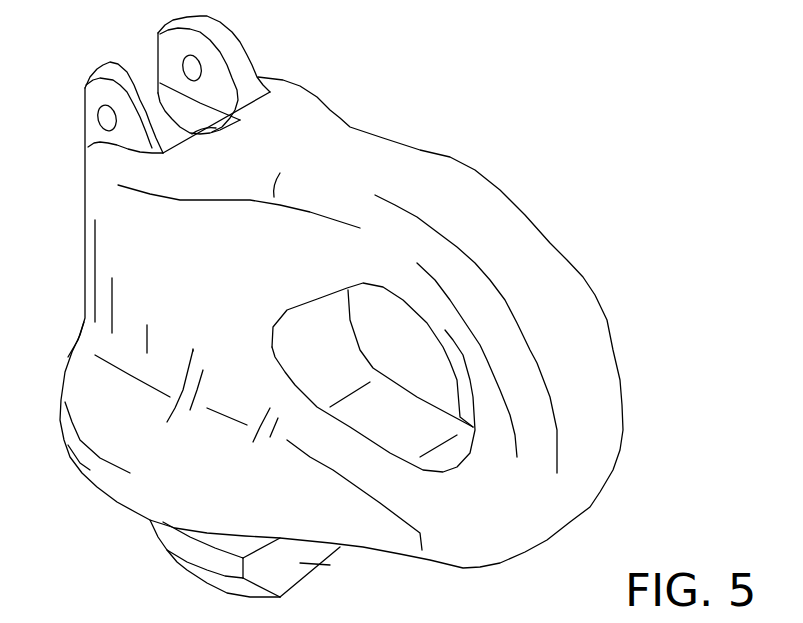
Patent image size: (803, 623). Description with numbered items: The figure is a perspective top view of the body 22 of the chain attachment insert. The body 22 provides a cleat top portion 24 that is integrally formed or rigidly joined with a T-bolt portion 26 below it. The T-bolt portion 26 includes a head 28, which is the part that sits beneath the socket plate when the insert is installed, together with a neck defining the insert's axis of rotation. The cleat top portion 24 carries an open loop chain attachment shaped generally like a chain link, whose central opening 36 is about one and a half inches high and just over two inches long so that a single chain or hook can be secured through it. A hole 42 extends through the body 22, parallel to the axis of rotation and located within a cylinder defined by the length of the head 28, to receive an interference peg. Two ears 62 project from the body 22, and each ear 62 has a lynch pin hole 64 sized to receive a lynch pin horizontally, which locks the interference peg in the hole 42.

The body 22 is at (508, 96).
The cleat top portion 24 is at (345, 160).
The T-bolt portion 26 is at (330, 565).
The head 28 is at (187, 551).
The opening 36 is at (417, 357).
The hole 42 is at (160, 63).
The ears 62 is at (107, 72).
The lynch pin hole 64 is at (107, 118).